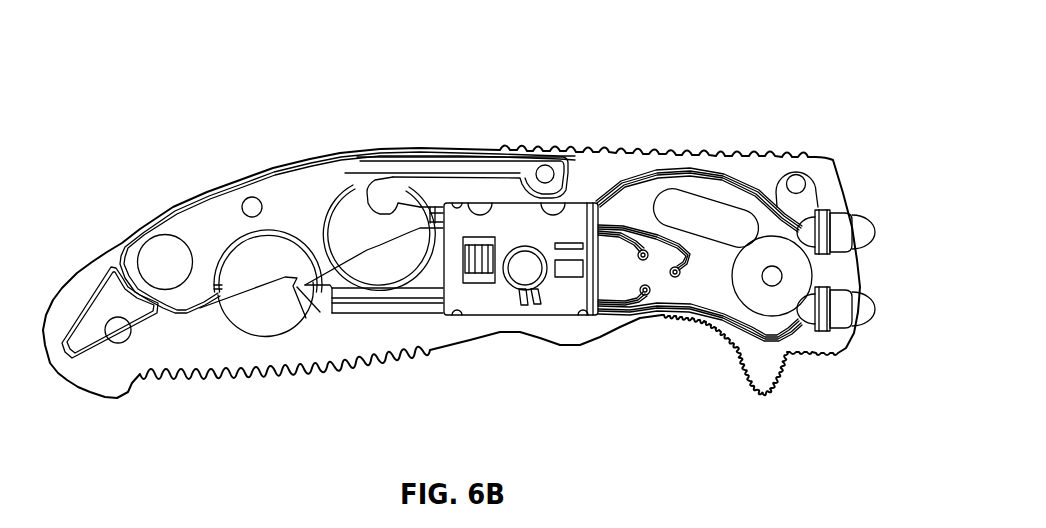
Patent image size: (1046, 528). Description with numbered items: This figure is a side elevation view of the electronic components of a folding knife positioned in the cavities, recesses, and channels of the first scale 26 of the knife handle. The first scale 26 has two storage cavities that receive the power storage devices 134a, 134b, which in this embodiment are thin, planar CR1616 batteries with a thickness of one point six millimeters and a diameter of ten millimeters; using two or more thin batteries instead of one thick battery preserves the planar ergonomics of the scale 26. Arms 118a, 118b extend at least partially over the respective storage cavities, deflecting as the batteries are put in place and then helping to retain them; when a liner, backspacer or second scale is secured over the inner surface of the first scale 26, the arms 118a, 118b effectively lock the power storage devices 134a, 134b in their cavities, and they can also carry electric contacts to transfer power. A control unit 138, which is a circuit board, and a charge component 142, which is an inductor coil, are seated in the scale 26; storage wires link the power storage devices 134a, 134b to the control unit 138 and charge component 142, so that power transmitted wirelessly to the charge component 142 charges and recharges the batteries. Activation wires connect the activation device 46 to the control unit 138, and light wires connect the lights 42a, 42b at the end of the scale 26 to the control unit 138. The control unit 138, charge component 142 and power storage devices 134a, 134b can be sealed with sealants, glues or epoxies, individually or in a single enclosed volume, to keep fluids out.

The first scale 26 is at (828, 72).
The light 42a is at (870, 228).
The light 42b is at (870, 305).
The activation device 46 is at (675, 277).
The arm 118a is at (288, 292).
The arm 118b is at (387, 199).
The power storage device 134a is at (245, 267).
The power storage device 134b is at (357, 213).
The control unit 138 is at (500, 224).
The charge component 142 is at (528, 307).